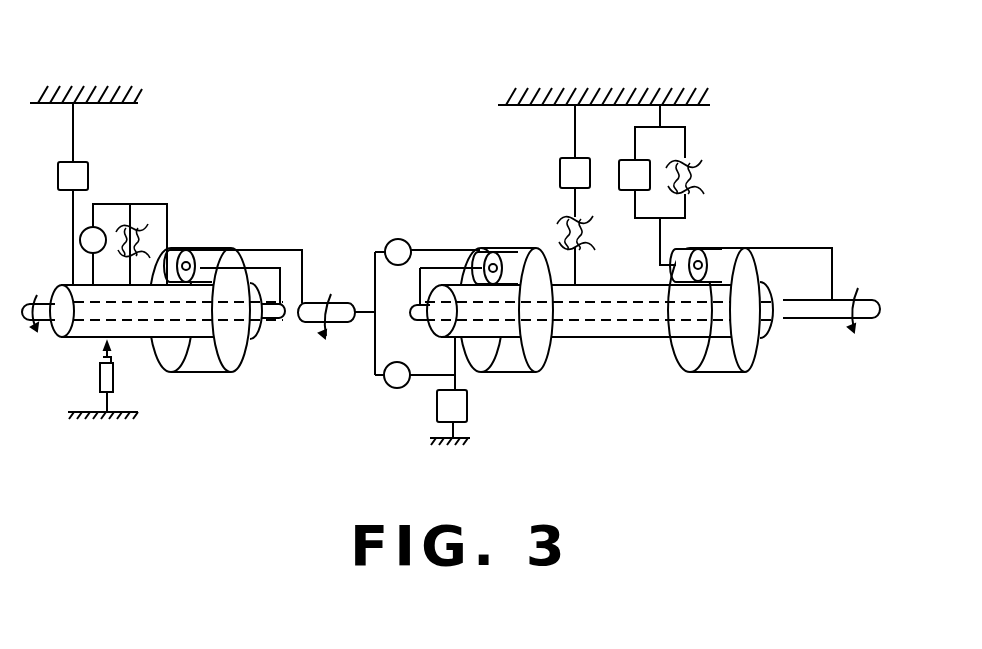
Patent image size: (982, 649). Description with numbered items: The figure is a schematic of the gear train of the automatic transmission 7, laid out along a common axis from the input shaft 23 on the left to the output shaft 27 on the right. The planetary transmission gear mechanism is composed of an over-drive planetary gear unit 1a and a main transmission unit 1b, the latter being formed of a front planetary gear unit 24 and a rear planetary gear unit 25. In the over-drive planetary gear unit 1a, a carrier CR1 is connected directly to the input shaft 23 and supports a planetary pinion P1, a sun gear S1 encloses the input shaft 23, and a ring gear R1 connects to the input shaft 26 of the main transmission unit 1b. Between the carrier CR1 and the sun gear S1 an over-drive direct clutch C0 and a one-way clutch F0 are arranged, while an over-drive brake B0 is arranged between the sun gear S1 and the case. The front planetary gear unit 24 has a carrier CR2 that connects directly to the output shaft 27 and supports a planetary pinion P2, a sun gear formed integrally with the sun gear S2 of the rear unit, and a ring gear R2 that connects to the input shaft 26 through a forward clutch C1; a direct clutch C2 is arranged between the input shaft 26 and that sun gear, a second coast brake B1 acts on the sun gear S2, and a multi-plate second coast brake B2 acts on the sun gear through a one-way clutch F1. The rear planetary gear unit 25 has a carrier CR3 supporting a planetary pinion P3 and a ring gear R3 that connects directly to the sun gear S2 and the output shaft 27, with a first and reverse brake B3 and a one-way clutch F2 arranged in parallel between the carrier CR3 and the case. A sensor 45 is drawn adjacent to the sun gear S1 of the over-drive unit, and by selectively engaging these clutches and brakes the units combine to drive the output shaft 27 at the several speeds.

The automatic transmission 7 is at (397, 88).
The input shaft 23 is at (44, 297).
The over-drive planetary gear unit 1a is at (160, 306).
The main transmission unit 1b is at (580, 293).
The front planetary gear unit 24 is at (580, 293).
The rear planetary gear unit 25 is at (740, 270).
The input shaft 26 is at (336, 328).
The output shaft 27 is at (823, 319).
The rotation speed sensor 45 is at (100, 386).
The over-drive brake B0 is at (73, 194).
The 2nd coast brake B1 is at (450, 391).
The 2nd coast brake B2 is at (575, 161).
The 1st & Rev. brake B3 is at (652, 185).
The over-drive direct clutch C0 is at (93, 240).
The forward clutch C1 is at (432, 252).
The direct clutch C2 is at (419, 375).
The one-way clutch F0 is at (123, 255).
The one-way clutch F1 is at (577, 250).
The one-way clutch F2 is at (696, 176).
The carrier CR1 is at (162, 204).
The carrier CR2 is at (451, 247).
The carrier CR3 is at (659, 244).
The planetary pinion P1 is at (192, 253).
The planetary pinion P2 is at (488, 252).
The planetary pinion P3 is at (696, 250).
The ring gear R1 is at (228, 357).
The ring gear R2 is at (521, 366).
The ring gear R3 is at (742, 250).
The sun gear S1 is at (137, 340).
The sun gear S2 is at (617, 339).